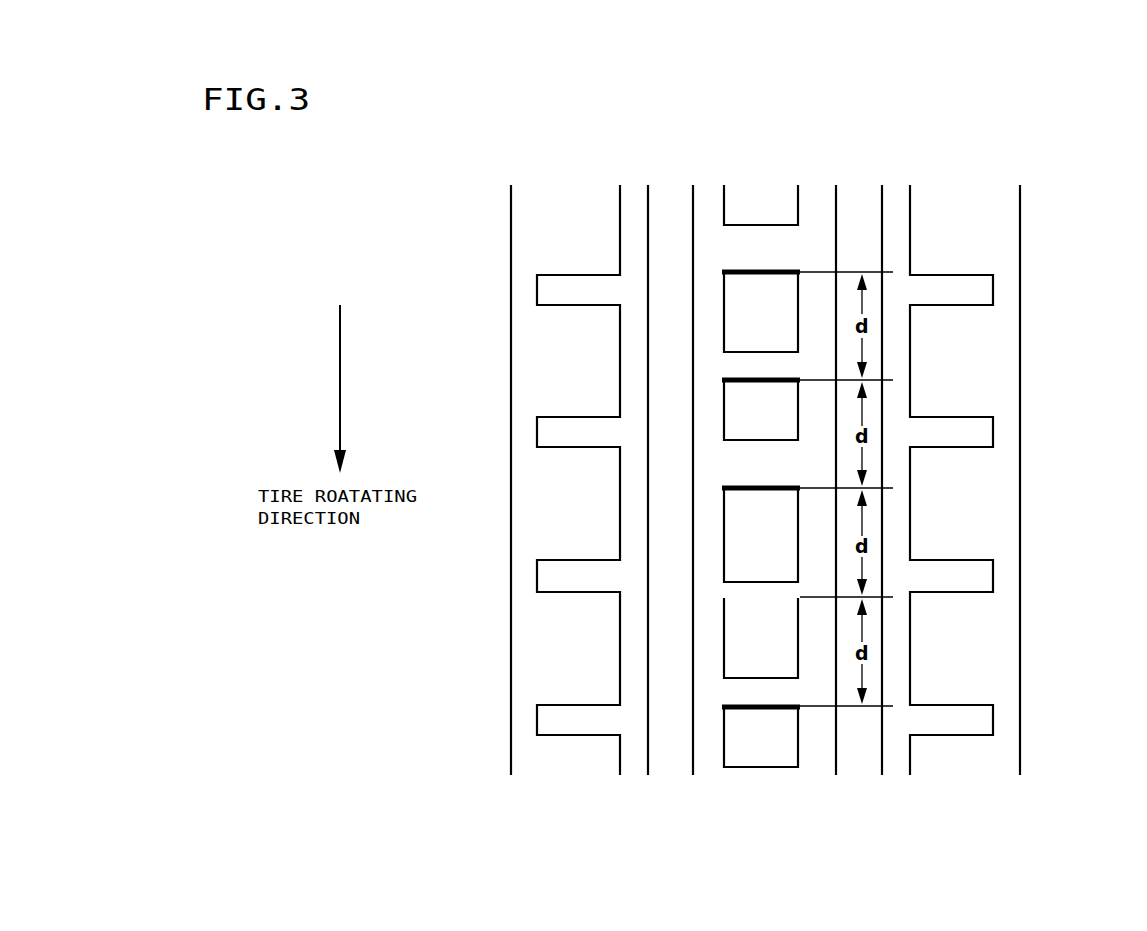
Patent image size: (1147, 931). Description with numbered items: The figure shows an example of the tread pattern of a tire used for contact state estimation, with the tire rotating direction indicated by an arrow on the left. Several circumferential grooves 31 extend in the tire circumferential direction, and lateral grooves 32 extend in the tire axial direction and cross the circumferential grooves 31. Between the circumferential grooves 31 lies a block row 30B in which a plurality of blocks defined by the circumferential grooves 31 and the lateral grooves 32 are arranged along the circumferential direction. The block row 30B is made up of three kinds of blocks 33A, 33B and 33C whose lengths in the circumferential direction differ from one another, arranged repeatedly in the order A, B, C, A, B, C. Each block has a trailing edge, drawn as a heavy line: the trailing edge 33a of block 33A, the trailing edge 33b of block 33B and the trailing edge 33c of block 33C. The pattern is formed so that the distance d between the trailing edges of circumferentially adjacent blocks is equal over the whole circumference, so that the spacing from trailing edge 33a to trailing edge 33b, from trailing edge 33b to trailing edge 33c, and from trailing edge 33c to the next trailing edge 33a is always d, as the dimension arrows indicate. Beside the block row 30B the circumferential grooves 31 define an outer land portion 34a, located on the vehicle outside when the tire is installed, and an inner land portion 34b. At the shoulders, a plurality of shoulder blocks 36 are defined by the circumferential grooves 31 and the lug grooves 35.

The block row 30B is at (760, 798).
The circumferential groove 31 is at (633, 182).
The lateral groove 32 is at (733, 459).
The block 33A is at (743, 322).
The block 33B is at (740, 381).
The block 33C is at (742, 559).
The trailing edge 33a is at (740, 270).
The trailing edge 33b is at (740, 378).
The trailing edge 33c is at (720, 486).
The outer land portion 34a is at (672, 752).
The inner land portion 34b is at (862, 768).
The lug groove 35 is at (960, 293).
The shoulder block 36 is at (950, 379).